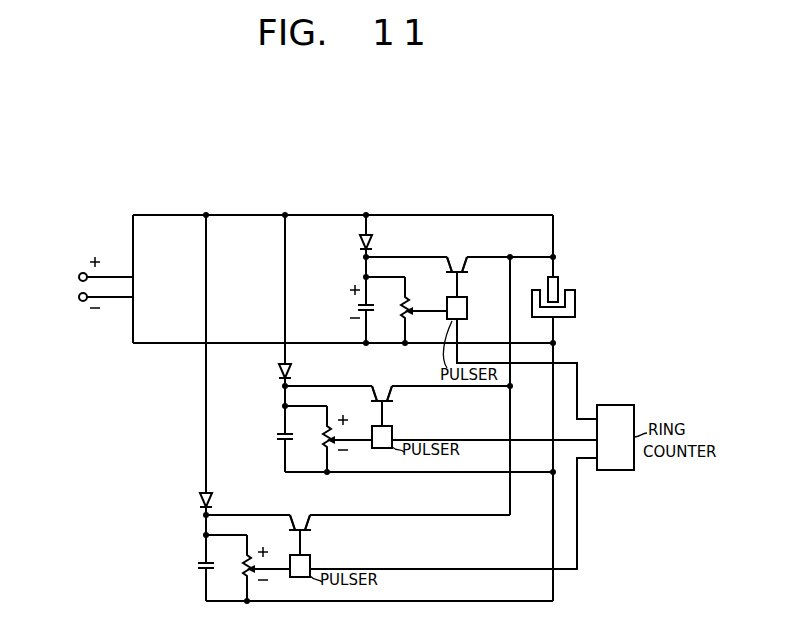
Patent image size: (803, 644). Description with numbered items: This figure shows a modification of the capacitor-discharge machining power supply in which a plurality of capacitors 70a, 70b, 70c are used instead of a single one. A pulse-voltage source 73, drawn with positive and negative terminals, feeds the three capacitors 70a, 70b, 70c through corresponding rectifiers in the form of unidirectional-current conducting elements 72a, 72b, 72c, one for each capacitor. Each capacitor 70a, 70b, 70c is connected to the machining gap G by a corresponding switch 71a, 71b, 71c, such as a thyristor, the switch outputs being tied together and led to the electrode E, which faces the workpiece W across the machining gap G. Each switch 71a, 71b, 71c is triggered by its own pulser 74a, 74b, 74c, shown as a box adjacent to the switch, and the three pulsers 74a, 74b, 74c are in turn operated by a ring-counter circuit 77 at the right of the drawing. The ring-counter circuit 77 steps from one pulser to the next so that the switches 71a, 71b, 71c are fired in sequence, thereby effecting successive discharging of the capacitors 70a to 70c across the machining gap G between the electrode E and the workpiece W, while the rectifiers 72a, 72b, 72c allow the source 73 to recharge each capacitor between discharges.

The pulse-voltage source 73 is at (76, 287).
The capacitor 70a is at (356, 308).
The capacitor 70b is at (276, 438).
The capacitor 70c is at (197, 566).
The switch 71a is at (452, 260).
The switch 71b is at (381, 398).
The switch 71c is at (300, 526).
The unidirectional-current conducting element 72a is at (372, 240).
The unidirectional-current conducting element 72b is at (292, 368).
The unidirectional-current conducting element 72c is at (212, 497).
The pulser 74a is at (467, 311).
The pulser 74b is at (392, 432).
The pulser 74c is at (310, 561).
The ring-counter circuit 77 is at (620, 470).
The electrode E is at (560, 288).
The machining gap G is at (562, 306).
The workpiece W is at (576, 313).